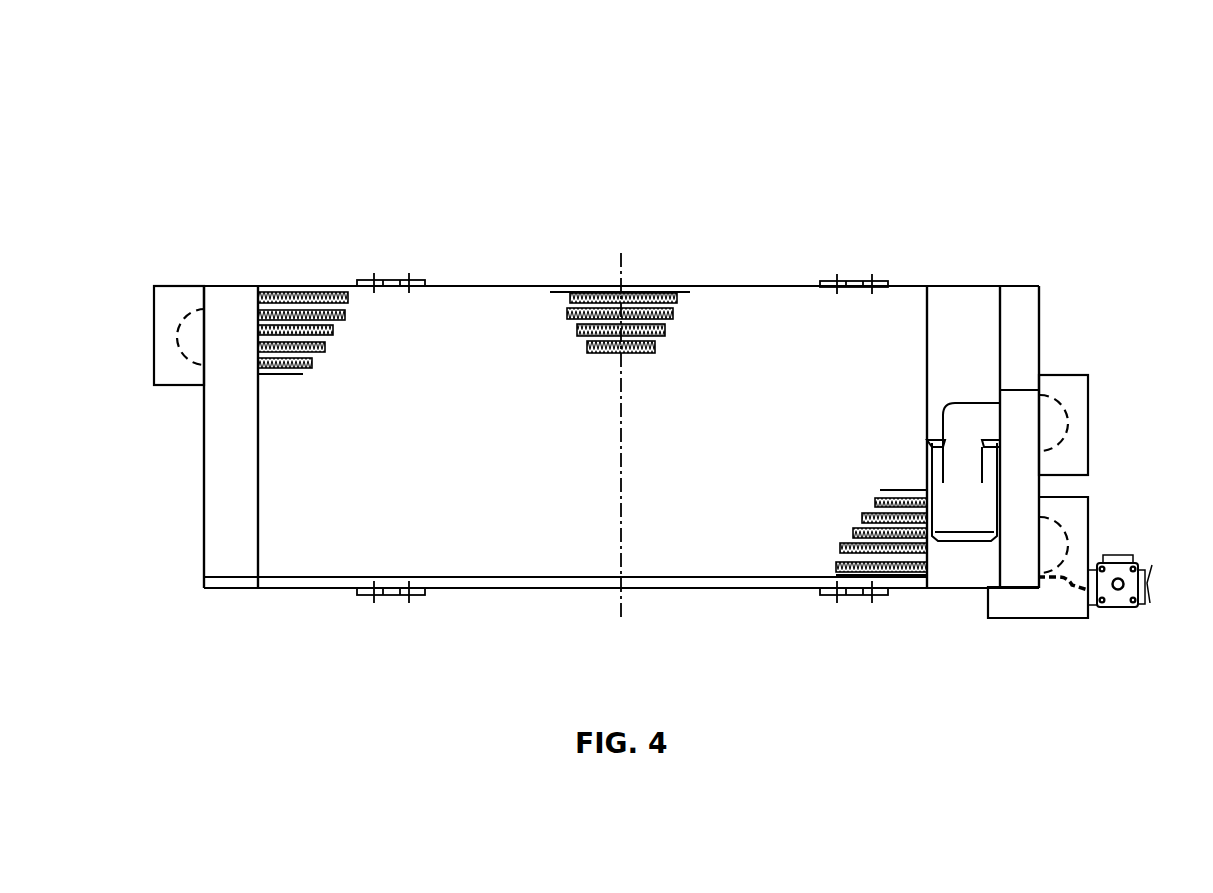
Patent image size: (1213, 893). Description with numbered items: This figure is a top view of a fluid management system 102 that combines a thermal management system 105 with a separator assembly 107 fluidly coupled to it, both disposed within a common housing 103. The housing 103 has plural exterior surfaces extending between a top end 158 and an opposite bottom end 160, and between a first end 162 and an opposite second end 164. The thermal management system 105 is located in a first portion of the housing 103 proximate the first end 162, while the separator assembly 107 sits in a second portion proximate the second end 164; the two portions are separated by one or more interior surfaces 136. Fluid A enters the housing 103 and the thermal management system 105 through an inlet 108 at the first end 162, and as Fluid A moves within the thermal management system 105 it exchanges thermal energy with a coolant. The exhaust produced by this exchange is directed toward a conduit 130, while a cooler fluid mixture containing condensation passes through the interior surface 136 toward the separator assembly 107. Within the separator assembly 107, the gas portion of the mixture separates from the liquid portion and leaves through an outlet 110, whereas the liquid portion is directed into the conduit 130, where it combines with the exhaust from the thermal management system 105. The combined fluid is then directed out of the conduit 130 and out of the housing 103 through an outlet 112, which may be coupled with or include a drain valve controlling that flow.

The fluid management system 102 is at (258, 128).
The common housing 103 is at (549, 287).
The thermal management system 105 is at (402, 244).
The separator assembly 107 is at (978, 383).
The inlet 108 is at (153, 287).
The outlet 110 is at (1092, 519).
The outlet 112 is at (1125, 617).
The conduit 130 is at (757, 574).
The interior surface 136 is at (921, 345).
The top end 158 is at (652, 255).
The bottom end 160 is at (650, 607).
The first end 162 is at (190, 488).
The second end 164 is at (1045, 355).
The Fluid A is at (105, 310).